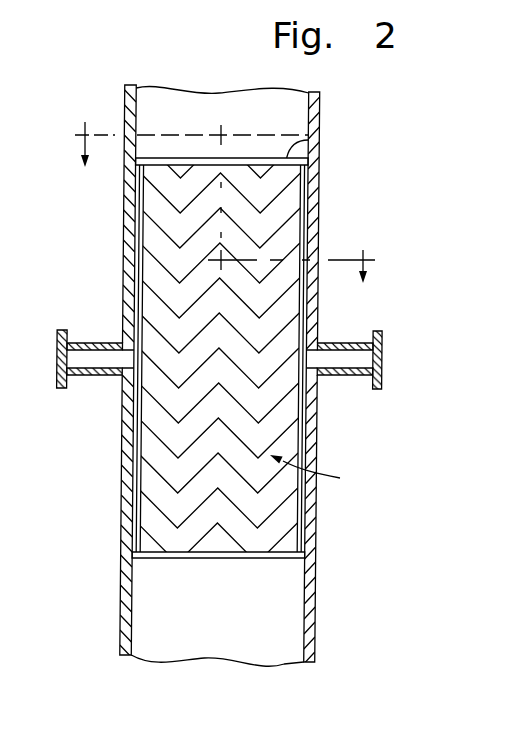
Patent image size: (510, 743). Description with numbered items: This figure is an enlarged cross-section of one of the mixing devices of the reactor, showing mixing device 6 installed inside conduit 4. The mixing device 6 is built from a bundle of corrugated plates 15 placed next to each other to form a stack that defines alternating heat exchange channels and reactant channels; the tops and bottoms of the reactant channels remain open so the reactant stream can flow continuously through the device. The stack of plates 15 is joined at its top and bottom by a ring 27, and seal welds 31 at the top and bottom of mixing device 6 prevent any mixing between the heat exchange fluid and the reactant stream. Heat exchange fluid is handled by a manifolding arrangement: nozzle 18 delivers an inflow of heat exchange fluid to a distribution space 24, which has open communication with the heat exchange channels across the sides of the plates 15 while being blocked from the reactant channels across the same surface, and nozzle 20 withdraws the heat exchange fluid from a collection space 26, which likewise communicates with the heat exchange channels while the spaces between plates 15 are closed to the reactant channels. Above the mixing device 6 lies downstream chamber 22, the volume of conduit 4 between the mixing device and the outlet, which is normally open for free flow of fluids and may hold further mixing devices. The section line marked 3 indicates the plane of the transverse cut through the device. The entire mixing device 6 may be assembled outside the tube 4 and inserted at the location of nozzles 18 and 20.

The section line 3- 3 is at (225, 213).
The conduit 4 is at (122, 486).
The mixing device 6 is at (319, 473).
The corrugated plates 15 is at (285, 238).
The nozzle 18 is at (95, 375).
The nozzle 20 is at (358, 377).
The downstream chamber 22 is at (285, 128).
The distribution space 24 is at (137, 270).
The collection space 26 is at (303, 300).
The ring 27 is at (309, 140).
The seal welds 31 is at (139, 102).